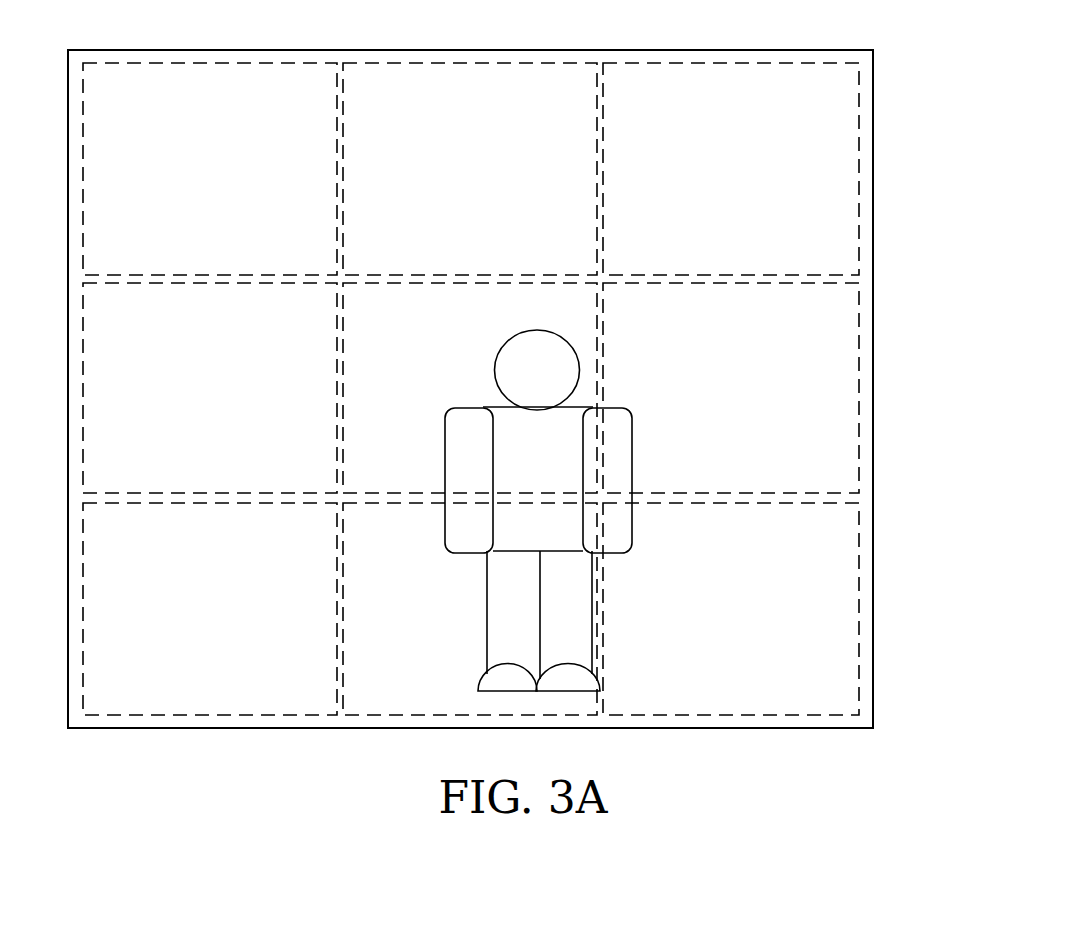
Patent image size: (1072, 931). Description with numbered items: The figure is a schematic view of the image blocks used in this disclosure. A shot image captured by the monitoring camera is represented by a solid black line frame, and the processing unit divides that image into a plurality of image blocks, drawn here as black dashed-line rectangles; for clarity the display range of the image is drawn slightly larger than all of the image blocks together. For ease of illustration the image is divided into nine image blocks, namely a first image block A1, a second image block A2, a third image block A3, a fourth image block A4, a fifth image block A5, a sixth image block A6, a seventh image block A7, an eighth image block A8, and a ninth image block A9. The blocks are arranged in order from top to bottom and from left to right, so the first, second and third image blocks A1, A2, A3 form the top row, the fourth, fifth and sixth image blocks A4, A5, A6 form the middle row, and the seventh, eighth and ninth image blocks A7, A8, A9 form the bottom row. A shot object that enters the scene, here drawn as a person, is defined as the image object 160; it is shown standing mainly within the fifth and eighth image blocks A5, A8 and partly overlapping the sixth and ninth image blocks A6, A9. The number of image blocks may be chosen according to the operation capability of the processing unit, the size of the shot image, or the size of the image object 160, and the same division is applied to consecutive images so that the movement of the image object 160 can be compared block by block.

The image object 160 is at (625, 438).
The first image block A1 is at (155, 129).
The second image block A2 is at (417, 129).
The third image block A3 is at (678, 129).
The fourth image block A4 is at (155, 339).
The fifth image block A5 is at (417, 339).
The sixth image block A6 is at (678, 339).
The seventh image block A7 is at (155, 690).
The eighth image block A8 is at (417, 690).
The ninth image block A9 is at (678, 690).